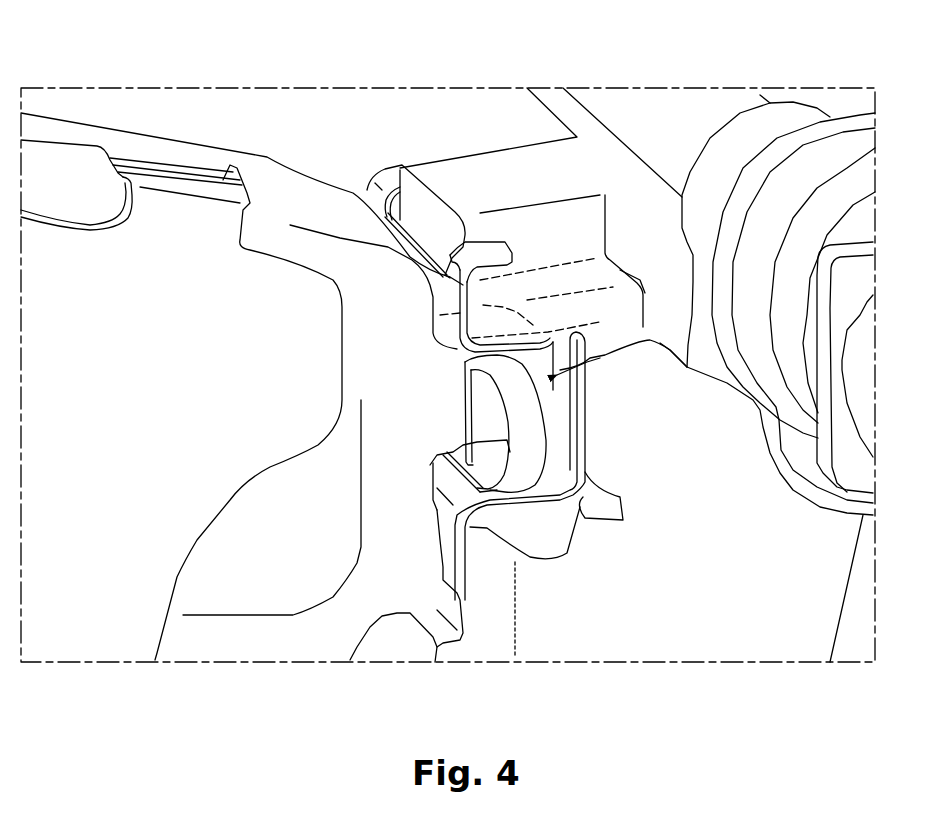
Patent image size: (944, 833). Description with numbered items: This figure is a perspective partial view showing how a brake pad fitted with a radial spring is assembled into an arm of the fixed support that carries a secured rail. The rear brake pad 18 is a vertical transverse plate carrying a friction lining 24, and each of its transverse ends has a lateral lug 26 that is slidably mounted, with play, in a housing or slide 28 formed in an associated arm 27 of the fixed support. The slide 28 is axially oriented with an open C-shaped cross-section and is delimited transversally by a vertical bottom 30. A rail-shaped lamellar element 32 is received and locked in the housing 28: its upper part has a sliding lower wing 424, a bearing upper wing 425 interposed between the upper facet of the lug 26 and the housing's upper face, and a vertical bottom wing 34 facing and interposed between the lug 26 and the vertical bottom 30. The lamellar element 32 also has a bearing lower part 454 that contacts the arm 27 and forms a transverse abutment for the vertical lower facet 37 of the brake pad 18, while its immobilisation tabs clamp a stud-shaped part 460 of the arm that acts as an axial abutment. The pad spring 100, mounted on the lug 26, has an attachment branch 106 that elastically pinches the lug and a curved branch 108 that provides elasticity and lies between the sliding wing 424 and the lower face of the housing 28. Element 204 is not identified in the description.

The rear brake pad 18 is at (100, 510).
The friction lining 24 is at (215, 143).
The stud-shaped complementary part 460 is at (428, 209).
The arm of the fixed support 27 is at (552, 220).
The rail-shaped lamellar element 32 is at (455, 290).
The vertical bearing upper wing 425 is at (547, 352).
The support rib 204 is at (590, 323).
The pad spring 100 is at (550, 455).
The vertical bottom of the housing 30 is at (583, 397).
The bottom wing of the lamellar element 34 is at (590, 358).
The housing or slide 28 is at (588, 476).
The lateral lug 26 is at (450, 363).
The attachment branch 106 is at (485, 415).
The curved branch 108 is at (503, 472).
The vertical lower facet of the brake pad 37 is at (440, 543).
The bearing lower part 454 is at (443, 560).
The sliding lower wing 424 is at (513, 503).